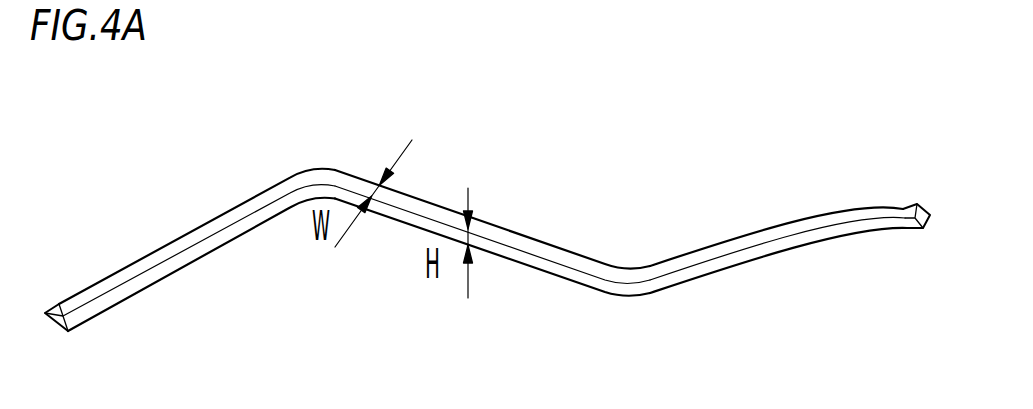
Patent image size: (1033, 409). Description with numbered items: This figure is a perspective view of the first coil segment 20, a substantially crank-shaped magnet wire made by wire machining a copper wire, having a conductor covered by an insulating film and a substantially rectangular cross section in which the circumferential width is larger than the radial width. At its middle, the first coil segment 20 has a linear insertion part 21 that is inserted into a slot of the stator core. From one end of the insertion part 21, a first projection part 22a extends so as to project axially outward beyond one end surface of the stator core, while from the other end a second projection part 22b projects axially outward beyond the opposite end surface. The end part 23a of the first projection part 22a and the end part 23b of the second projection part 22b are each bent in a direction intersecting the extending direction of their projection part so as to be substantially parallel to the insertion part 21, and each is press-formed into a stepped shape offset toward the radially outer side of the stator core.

The first coil segment 20 is at (566, 156).
The insertion part 21 is at (578, 263).
The first projection part 22a is at (767, 247).
The second projection part 22b is at (197, 250).
The end part 23a is at (922, 207).
The end part 23b is at (55, 301).